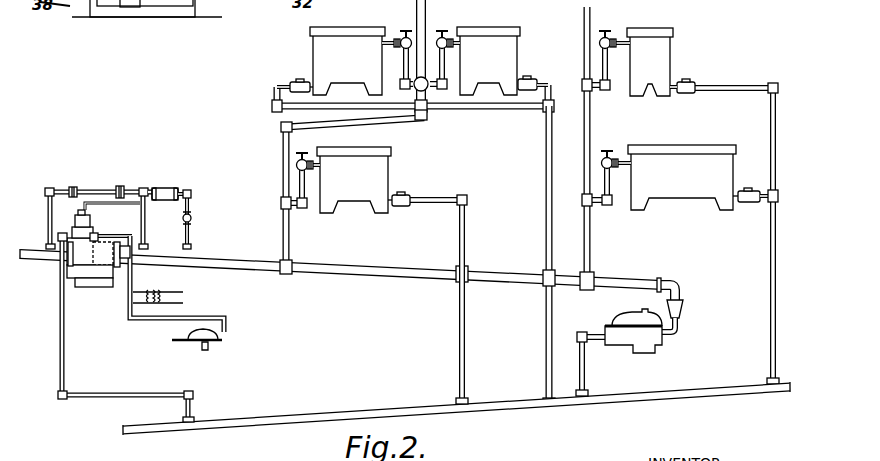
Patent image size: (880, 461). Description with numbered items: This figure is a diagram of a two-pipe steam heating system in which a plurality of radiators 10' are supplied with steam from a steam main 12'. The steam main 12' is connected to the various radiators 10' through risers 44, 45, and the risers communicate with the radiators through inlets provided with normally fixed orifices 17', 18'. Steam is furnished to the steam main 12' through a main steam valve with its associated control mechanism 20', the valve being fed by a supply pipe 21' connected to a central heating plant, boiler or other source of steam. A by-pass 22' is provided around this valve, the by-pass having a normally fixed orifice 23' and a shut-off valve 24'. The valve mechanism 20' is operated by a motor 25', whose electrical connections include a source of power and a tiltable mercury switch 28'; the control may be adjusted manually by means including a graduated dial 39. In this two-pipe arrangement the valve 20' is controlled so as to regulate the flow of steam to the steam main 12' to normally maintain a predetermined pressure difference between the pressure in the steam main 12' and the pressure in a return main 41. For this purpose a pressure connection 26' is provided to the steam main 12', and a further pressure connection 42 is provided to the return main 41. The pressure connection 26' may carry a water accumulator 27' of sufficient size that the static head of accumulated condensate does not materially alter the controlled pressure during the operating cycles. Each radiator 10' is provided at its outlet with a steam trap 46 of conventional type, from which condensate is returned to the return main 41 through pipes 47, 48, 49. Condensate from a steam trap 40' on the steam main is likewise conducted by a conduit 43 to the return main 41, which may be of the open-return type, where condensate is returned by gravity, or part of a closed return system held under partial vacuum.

The radiator 10' is at (506, 120).
The steam main 12' is at (351, 285).
The normally fixed orifice 17' is at (395, 44).
The normally fixed orifice 18' is at (456, 44).
The main steam valve 20' is at (98, 269).
The supply pipe 21' is at (30, 240).
The by-pass 22' is at (96, 203).
The normally fixed orifice 23' is at (140, 177).
The shut-off valve 24' is at (94, 179).
The motor 25' is at (112, 220).
The pressure connection 26' is at (169, 219).
The water accumulator 27' is at (176, 183).
The tiltable mercury switch 28' is at (196, 293).
The graduated dial 39 is at (130, 9).
The steam trap 40' is at (658, 334).
The return main 41 is at (341, 412).
The pressure connection 42 is at (64, 369).
The conduit 43 is at (585, 374).
The riser 44 is at (400, 124).
The riser 45 is at (590, 127).
The steam trap 46 is at (284, 84).
The pipe 47 is at (464, 198).
The pipe 48 is at (511, 110).
The pipe 49 is at (733, 92).